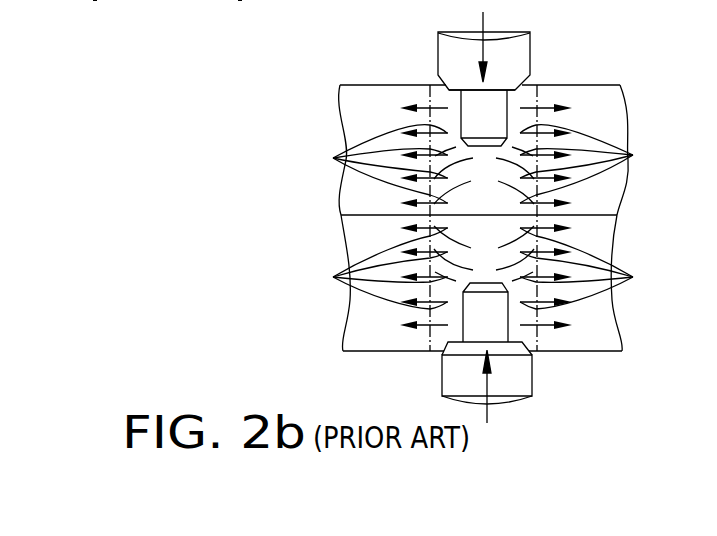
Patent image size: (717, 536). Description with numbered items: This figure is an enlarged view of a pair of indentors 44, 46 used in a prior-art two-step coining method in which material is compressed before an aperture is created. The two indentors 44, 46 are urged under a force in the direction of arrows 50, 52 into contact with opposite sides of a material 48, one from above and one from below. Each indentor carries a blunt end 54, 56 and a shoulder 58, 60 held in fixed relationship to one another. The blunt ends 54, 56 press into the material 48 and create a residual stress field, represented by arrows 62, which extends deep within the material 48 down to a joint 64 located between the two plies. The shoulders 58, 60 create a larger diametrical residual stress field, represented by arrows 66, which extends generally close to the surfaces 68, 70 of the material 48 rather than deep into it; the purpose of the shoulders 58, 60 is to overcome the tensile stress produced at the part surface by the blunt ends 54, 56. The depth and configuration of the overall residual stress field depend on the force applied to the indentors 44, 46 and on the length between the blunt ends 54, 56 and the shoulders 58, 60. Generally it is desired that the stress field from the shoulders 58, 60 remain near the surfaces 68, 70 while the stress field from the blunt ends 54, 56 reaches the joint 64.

The indentor 44 is at (418, 40).
The indentor 46 is at (552, 388).
The material 48 is at (327, 104).
The arrow 50 is at (485, 13).
The arrow 52 is at (489, 410).
The blunt end 54 is at (487, 148).
The blunt end 56 is at (487, 282).
The shoulder 58 is at (543, 84).
The shoulder 60 is at (442, 356).
The arrows 62 is at (485, 217).
The joint 64 is at (592, 216).
The arrows 66 is at (424, 107).
The surface 68 is at (598, 85).
The surface 70 is at (605, 351).